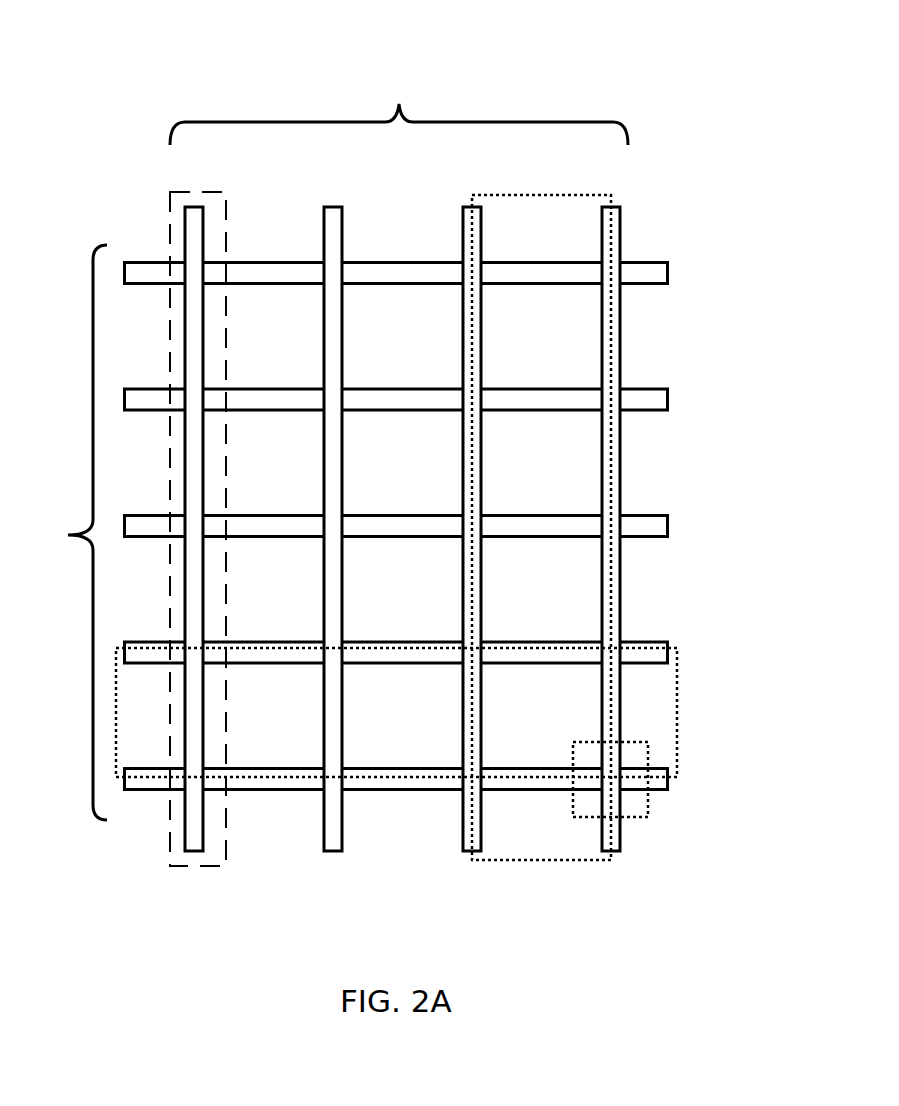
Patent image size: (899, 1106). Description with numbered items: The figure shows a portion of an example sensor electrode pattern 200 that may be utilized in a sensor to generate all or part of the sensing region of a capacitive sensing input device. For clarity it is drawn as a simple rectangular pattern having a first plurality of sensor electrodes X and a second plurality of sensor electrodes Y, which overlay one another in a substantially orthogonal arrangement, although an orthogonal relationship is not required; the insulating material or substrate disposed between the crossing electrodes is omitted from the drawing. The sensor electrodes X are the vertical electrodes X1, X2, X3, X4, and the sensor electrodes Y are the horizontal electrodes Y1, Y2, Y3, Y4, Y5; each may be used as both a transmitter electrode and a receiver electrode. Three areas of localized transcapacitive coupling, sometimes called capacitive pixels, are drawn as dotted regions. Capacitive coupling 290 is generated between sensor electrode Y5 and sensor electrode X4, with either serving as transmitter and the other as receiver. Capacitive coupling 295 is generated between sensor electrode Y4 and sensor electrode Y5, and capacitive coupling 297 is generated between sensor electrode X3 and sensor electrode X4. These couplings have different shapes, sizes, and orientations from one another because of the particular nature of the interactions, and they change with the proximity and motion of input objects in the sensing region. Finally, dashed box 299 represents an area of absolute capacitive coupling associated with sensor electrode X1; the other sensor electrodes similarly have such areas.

The sensor electrode pattern 200 is at (107, 33).
The first plurality of sensor electrodes X is at (399, 108).
The second plurality of sensor electrodes Y is at (63, 532).
The sensor electrode X1 is at (196, 843).
The sensor electrode X2 is at (330, 830).
The sensor electrode X3 is at (462, 832).
The sensor electrode X4 is at (620, 832).
The sensor electrode Y1 is at (661, 280).
The sensor electrode Y2 is at (661, 406).
The sensor electrode Y3 is at (661, 532).
The sensor electrode Y4 is at (662, 657).
The sensor electrode Y5 is at (668, 784).
The dashed box 299 is at (226, 866).
The capacitive coupling 297 is at (543, 861).
The capacitive coupling 295 is at (677, 701).
The capacitive coupling 290 is at (648, 806).